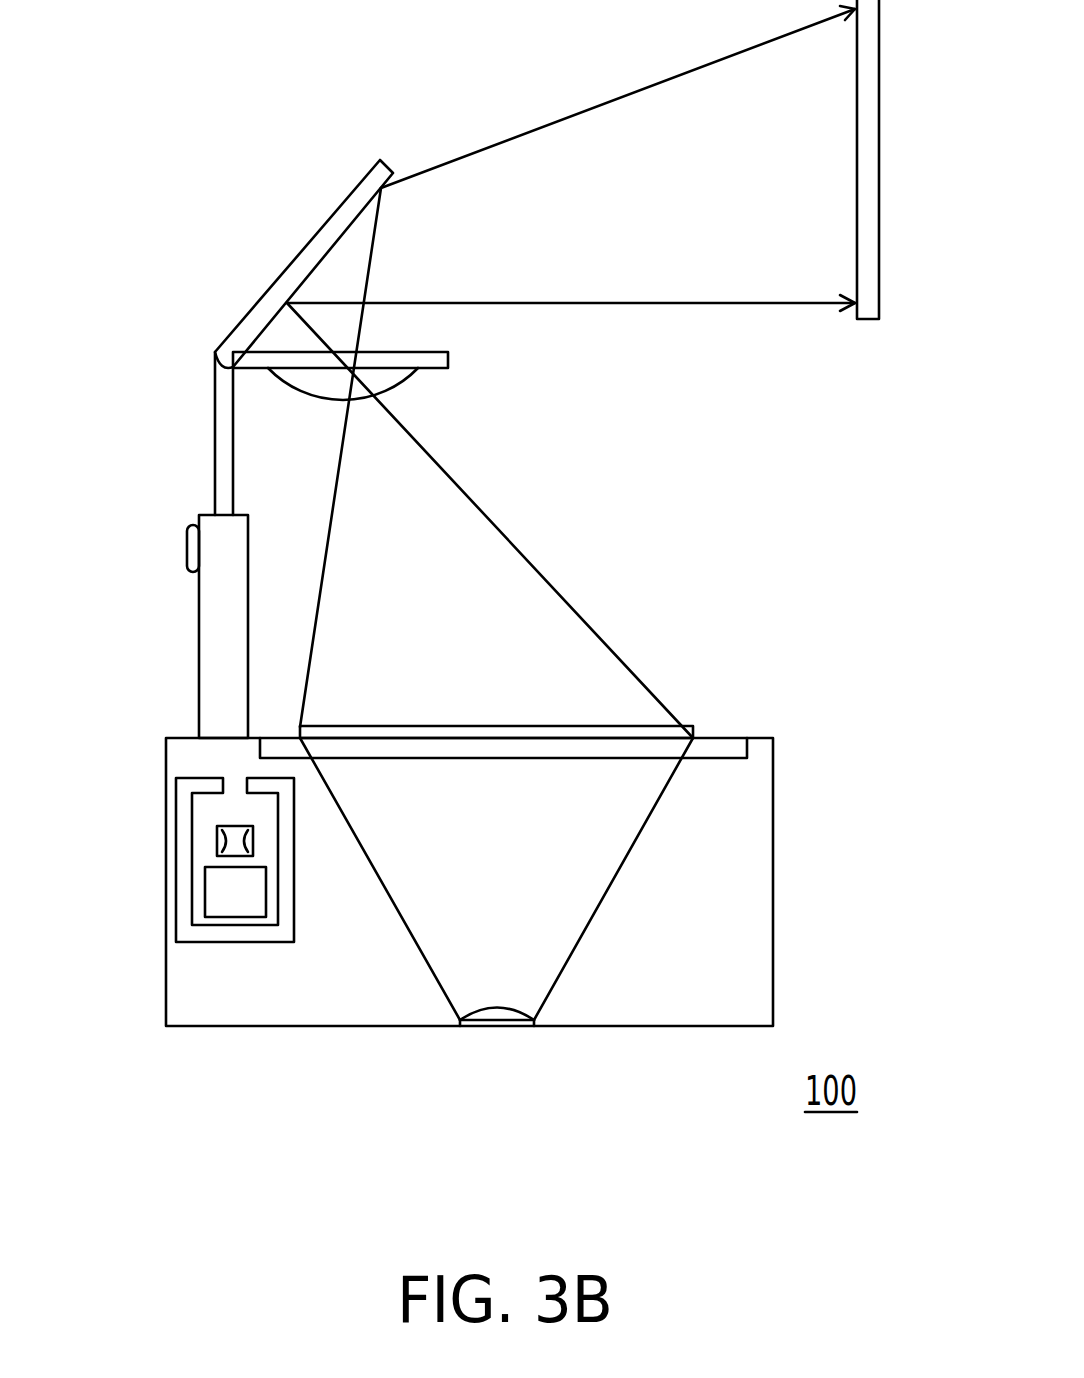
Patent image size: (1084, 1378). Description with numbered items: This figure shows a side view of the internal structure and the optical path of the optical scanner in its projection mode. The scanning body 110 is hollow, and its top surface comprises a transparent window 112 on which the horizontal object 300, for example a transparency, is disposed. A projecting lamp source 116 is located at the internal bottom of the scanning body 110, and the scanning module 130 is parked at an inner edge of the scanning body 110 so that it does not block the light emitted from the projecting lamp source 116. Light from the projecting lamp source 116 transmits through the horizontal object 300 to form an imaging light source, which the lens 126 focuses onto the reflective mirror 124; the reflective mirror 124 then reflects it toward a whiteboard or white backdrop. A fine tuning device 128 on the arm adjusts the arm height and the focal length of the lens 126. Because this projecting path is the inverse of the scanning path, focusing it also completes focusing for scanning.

The scanning body 110 is at (773, 835).
The transparent window 112 is at (708, 745).
The projecting lamp source 116 is at (510, 1022).
The reflective mirror 124 is at (320, 247).
The lens 126 is at (392, 376).
The fine tuning device 128 is at (190, 548).
The scanning module 130 is at (200, 953).
The horizontal object 300 is at (612, 732).